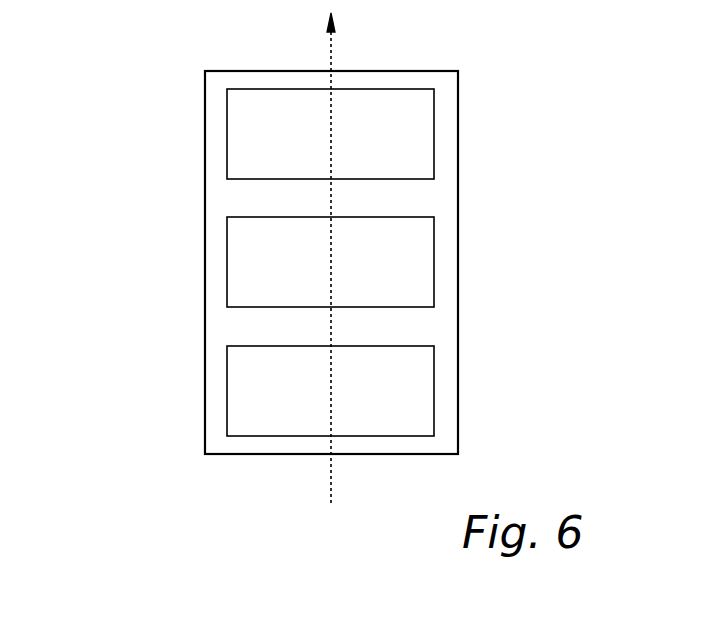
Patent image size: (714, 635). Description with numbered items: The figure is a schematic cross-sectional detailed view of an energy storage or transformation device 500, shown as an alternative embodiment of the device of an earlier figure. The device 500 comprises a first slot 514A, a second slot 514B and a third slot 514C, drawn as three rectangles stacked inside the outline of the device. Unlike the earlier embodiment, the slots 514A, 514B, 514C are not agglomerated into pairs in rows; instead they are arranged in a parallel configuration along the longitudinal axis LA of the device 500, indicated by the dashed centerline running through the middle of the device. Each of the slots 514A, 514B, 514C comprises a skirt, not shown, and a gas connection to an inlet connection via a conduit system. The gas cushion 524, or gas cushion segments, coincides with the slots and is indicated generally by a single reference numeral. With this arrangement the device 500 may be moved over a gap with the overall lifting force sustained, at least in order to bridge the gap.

The energy storage or transformation device 500 is at (411, 269).
The first slot 514A is at (298, 406).
The second slot 514B is at (298, 277).
The third slot 514C is at (298, 149).
The gas cushion 524 is at (95, 466).
The longitudinal axis LA is at (331, 474).